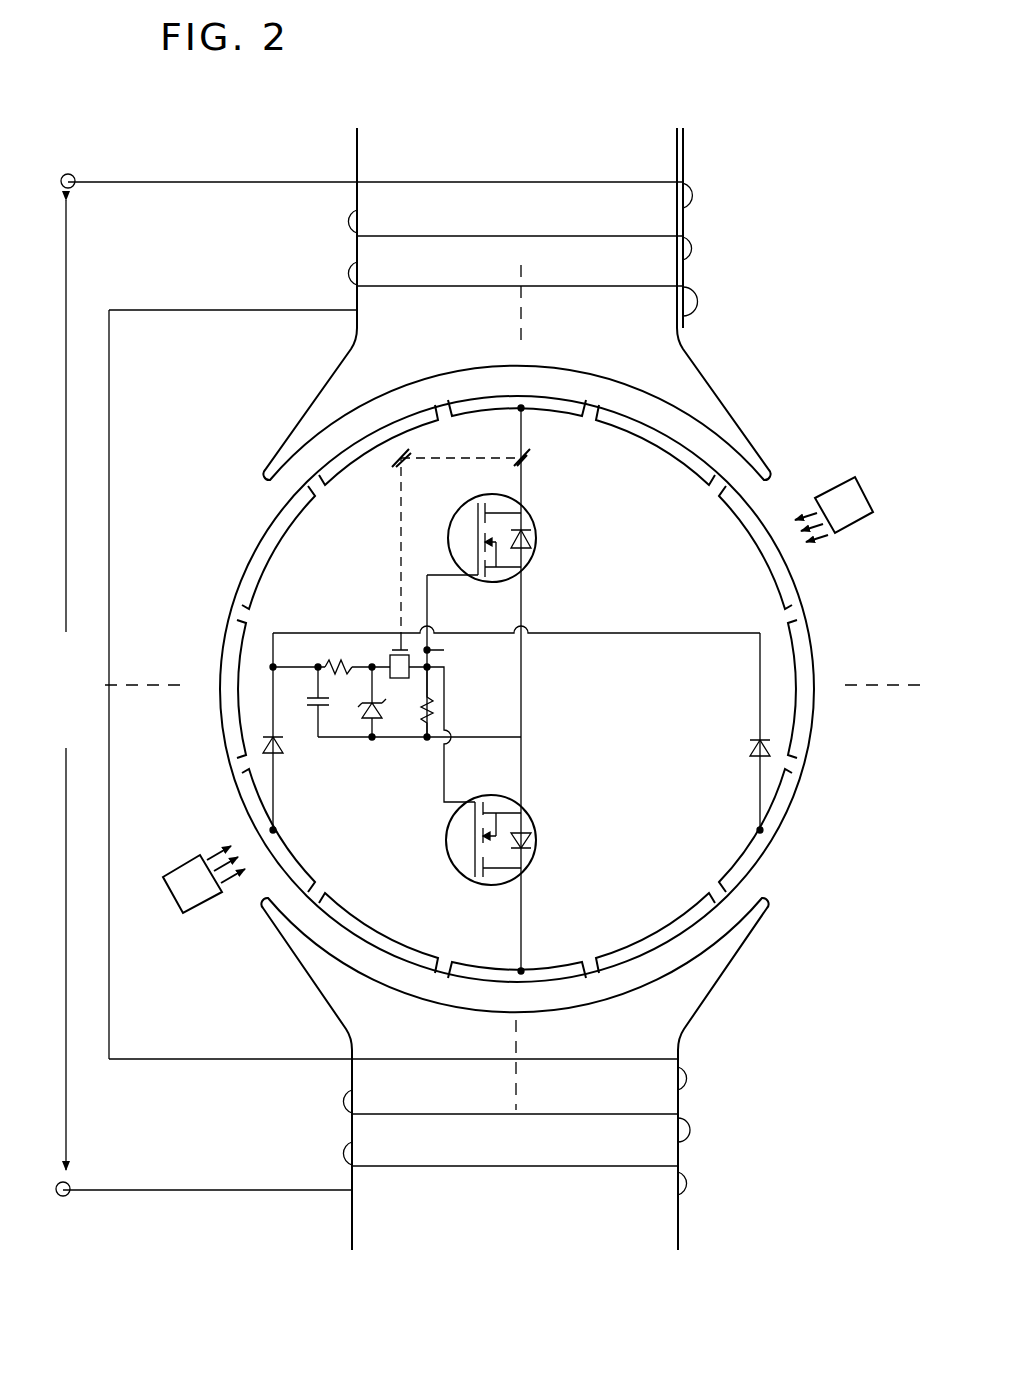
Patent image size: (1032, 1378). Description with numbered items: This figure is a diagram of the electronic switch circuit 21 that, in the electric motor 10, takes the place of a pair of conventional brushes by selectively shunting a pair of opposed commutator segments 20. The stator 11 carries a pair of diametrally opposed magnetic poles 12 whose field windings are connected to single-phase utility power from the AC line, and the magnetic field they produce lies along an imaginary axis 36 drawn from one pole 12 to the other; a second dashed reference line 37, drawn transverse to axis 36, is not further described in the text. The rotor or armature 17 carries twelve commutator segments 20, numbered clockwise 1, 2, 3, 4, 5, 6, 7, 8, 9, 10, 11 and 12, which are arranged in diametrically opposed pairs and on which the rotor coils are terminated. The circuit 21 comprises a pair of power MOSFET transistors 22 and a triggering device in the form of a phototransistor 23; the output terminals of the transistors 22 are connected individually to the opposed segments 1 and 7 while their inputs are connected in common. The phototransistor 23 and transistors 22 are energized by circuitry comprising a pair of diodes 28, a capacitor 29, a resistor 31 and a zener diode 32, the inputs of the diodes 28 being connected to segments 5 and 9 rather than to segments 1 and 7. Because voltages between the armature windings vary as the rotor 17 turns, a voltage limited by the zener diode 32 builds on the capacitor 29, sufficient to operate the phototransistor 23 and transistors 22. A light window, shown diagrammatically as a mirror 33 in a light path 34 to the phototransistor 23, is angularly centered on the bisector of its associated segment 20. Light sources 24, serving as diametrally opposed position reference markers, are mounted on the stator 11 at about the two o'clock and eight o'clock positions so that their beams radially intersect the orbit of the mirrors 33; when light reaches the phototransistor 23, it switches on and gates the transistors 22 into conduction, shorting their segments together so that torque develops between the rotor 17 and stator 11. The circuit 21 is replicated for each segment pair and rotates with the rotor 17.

The commutator segment 1 is at (517, 396).
The commutator segment 2 is at (655, 445).
The commutator segment 3 is at (756, 547).
The commutator segment 4 is at (812, 689).
The commutator segment 5 is at (755, 830).
The commutator segment 6 is at (655, 933).
The commutator segment 7 is at (517, 986).
The commutator segment 8 is at (378, 933).
The commutator segment 9 is at (278, 830).
The electric motor 10 is at (768, 322).
The motor stator 11 is at (694, 222).
The magnetic pole 12 is at (378, 445).
The rotor 17 is at (815, 612).
The commutator segment 20 is at (555, 693).
The electronic switch circuit 21 is at (628, 612).
The power MOSFET transistor 22 is at (527, 522).
The phototransistor 23 is at (395, 655).
The light source 24 is at (845, 478).
The diode 28 is at (279, 762).
The capacitor 29 is at (322, 712).
The resistor 31 is at (338, 662).
The zener diode 32 is at (380, 715).
The mirror 33 is at (535, 459).
The light path 34 is at (455, 482).
The field axis 36 is at (515, 330).
The transverse axis 37 is at (148, 690).